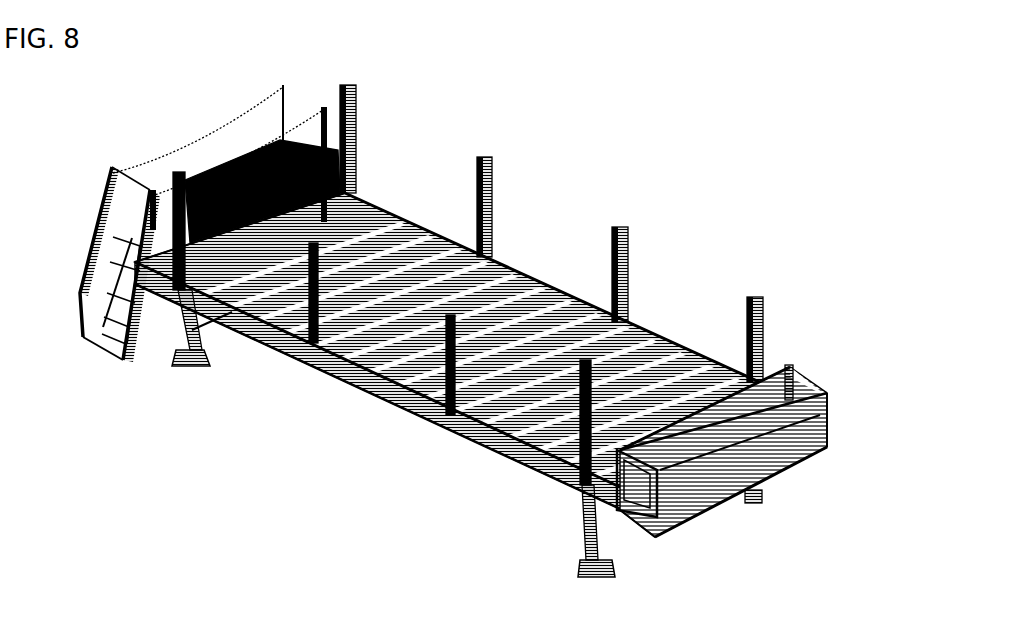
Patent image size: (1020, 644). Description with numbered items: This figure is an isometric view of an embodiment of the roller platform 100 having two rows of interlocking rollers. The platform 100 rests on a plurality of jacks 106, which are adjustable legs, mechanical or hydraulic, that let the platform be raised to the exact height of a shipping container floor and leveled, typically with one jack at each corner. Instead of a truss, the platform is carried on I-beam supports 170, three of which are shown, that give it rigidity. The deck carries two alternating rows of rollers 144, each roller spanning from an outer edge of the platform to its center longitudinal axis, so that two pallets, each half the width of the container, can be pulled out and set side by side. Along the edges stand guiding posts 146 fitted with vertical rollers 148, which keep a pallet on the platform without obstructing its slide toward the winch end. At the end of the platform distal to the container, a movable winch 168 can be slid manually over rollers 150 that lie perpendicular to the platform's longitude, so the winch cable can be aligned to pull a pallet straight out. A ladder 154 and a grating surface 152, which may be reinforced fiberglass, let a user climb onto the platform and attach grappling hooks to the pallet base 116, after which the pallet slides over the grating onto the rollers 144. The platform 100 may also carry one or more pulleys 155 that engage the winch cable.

The platform 100 is at (513, 270).
The jacks 106 is at (618, 578).
The pallet base 116 is at (196, 370).
The rollers 144 is at (433, 388).
The guiding posts 146 is at (630, 247).
The vertical rollers 148 is at (474, 167).
The rollers 150 is at (826, 405).
The grating surface 152 is at (208, 183).
The ladder 154 is at (78, 312).
The pulleys 155 is at (316, 188).
The movable winch 168 is at (753, 437).
The I-beam supports 170 is at (272, 330).